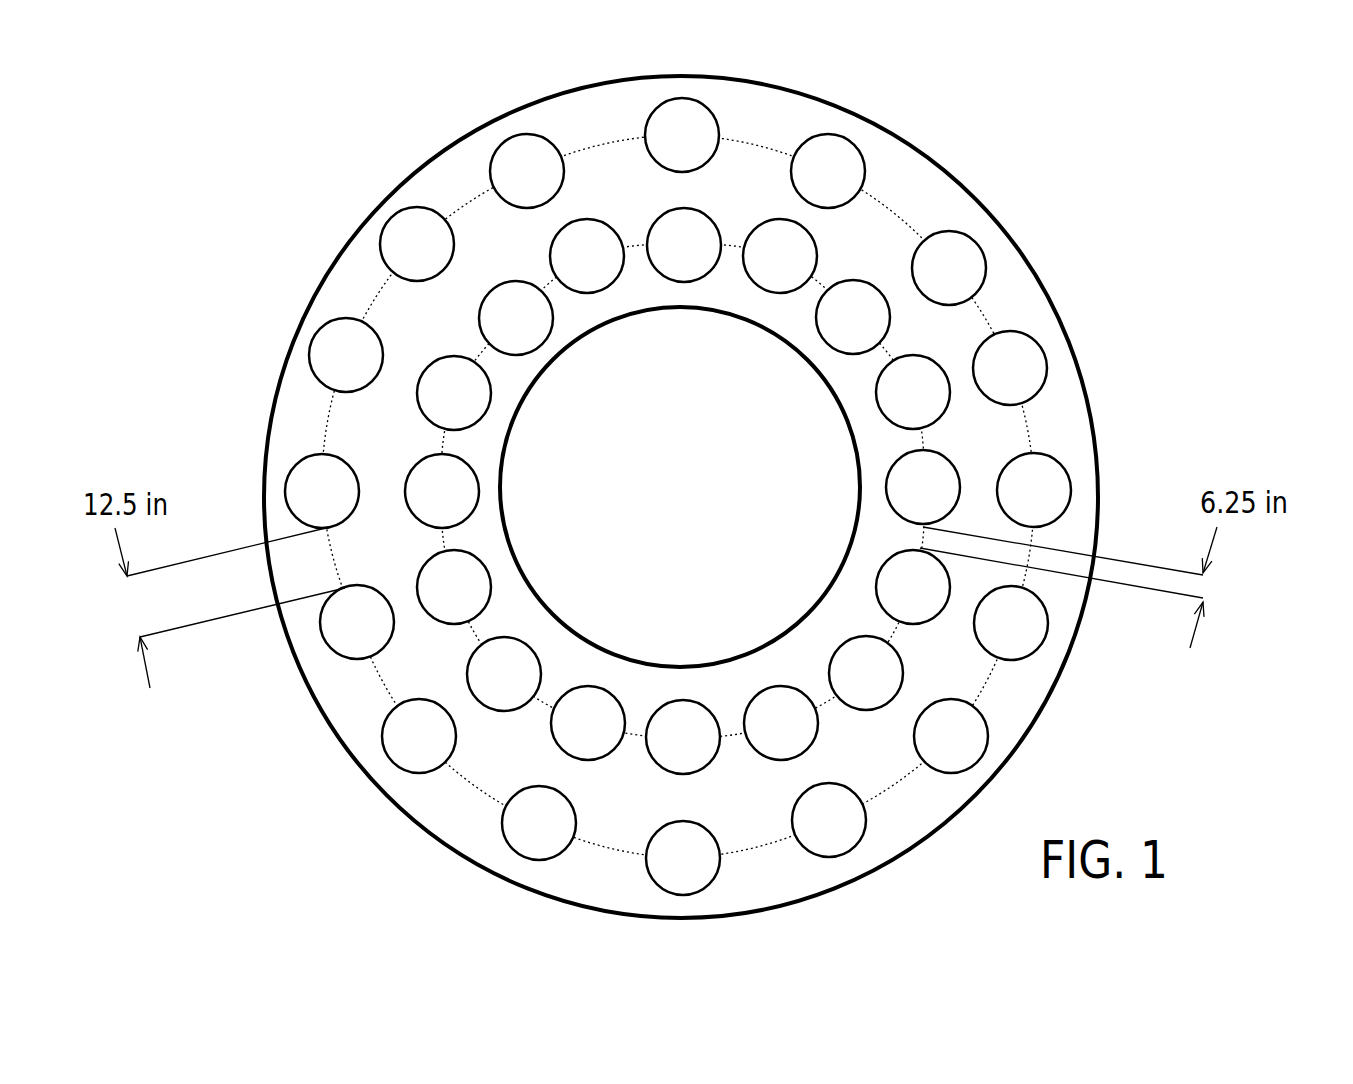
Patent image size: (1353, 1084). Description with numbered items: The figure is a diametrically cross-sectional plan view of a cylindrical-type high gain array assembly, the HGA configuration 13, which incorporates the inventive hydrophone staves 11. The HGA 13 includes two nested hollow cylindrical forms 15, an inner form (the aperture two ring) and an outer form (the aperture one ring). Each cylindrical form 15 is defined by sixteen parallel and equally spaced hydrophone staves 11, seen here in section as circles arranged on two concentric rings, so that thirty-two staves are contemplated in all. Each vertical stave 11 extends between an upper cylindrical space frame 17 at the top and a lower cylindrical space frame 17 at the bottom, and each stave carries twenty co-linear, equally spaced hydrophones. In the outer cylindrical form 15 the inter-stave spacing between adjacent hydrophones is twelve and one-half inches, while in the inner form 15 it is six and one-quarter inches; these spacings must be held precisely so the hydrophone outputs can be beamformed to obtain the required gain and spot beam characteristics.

The hydrophone stave 11 is at (1015, 367).
The HGA configuration 13 is at (252, 198).
The cylindrical form 15 is at (602, 452).
The cylindrical space frame 17 is at (897, 180).